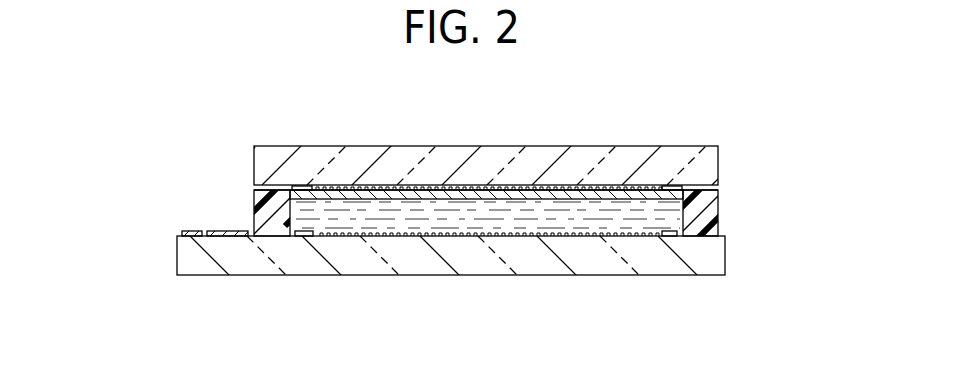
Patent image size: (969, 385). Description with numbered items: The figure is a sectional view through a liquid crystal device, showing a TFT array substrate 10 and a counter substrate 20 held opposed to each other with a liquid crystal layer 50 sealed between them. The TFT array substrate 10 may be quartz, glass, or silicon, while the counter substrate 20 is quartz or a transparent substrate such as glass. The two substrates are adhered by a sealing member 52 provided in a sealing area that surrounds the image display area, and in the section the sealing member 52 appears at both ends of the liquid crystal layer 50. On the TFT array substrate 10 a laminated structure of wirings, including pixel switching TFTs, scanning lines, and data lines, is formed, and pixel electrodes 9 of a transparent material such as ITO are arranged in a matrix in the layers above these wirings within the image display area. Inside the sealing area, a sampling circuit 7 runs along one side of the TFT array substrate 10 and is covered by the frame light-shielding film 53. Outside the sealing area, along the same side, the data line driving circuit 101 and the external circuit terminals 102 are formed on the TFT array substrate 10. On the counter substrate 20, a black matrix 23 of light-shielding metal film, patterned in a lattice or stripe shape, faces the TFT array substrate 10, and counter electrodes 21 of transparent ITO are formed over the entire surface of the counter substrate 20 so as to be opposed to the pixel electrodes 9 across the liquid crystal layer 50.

The sampling circuit 7 is at (298, 237).
The pixel electrodes 9 is at (338, 237).
The TFT array substrate 10 is at (540, 267).
The counter substrate 20 is at (403, 158).
The counter electrodes 21 is at (475, 188).
The black matrix 23 is at (610, 188).
The liquid crystal layer 50 is at (433, 217).
The sealing member 52 is at (265, 213).
The frame light-shielding film 53 is at (300, 188).
The data line driving circuit 101 is at (232, 233).
The external circuit terminals 102 is at (188, 230).